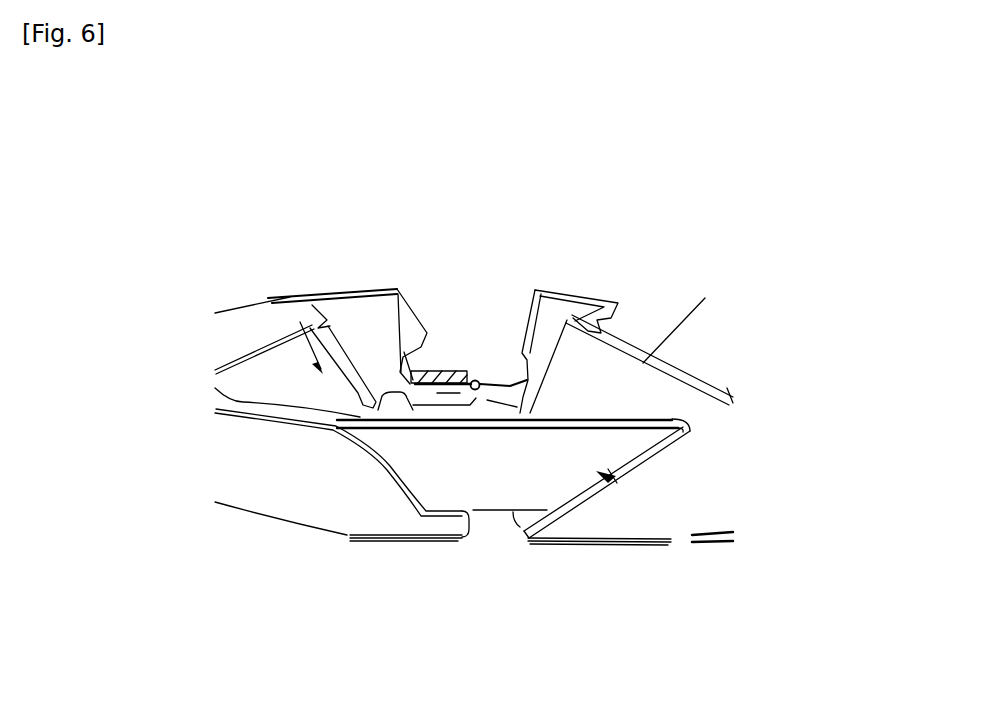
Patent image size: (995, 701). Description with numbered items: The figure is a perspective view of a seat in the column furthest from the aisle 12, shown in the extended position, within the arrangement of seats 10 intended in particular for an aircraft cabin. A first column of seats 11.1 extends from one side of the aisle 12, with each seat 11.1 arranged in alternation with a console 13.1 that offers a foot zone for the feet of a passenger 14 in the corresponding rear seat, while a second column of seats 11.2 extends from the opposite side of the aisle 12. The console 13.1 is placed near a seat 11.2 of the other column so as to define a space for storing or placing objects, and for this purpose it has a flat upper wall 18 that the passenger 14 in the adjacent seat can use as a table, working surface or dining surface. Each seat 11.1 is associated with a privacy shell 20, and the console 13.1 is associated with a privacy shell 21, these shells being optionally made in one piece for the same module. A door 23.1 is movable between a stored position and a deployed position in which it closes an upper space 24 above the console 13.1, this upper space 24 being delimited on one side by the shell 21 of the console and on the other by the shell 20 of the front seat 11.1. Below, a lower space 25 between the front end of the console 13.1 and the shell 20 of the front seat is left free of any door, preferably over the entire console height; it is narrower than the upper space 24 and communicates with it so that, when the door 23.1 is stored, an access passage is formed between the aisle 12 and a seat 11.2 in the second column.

The arrangement of seats 10 is at (291, 207).
The seat of the first column 11.1 is at (707, 316).
The seat of the second column 11.2 is at (423, 378).
The aisle 12 is at (700, 562).
The console 13.1 is at (283, 337).
The passenger 14 is at (457, 366).
The upper wall 18 is at (394, 287).
The privacy shell of the seat 20 is at (712, 437).
The privacy shell of the console 21 is at (253, 460).
The door 23.1 is at (453, 463).
The upper space 24 is at (627, 478).
The lower space 25 is at (499, 525).